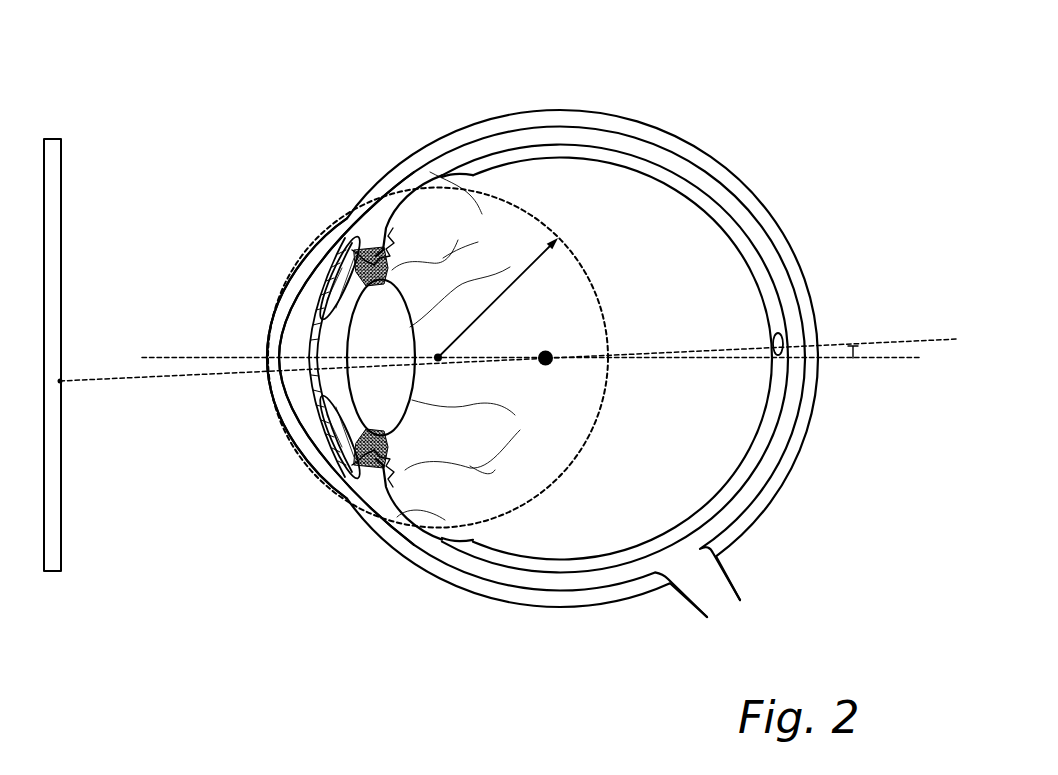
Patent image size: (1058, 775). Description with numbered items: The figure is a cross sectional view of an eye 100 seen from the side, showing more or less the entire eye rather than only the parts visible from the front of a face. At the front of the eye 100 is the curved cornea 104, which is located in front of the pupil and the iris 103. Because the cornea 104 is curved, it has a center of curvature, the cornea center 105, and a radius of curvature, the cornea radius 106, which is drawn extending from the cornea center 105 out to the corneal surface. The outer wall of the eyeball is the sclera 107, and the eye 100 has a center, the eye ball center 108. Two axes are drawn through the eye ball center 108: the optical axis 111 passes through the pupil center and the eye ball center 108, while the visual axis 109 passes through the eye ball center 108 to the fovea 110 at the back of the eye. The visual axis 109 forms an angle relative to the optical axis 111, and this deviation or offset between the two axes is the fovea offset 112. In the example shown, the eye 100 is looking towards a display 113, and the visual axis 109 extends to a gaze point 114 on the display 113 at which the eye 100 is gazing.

The eye 100 is at (214, 100).
The iris 103 is at (318, 306).
The cornea 104 is at (298, 463).
The center of corneal curvature 105 is at (438, 358).
The cornea radius 106 is at (504, 298).
The sclera 107 is at (624, 117).
The eye ball center 108 is at (548, 365).
The visual axis 109 is at (188, 376).
The fovea 110 is at (781, 334).
The optical axis 111 is at (168, 356).
The fovea offset 112 is at (853, 347).
The display 113 is at (62, 176).
The gaze point 114 is at (61, 382).